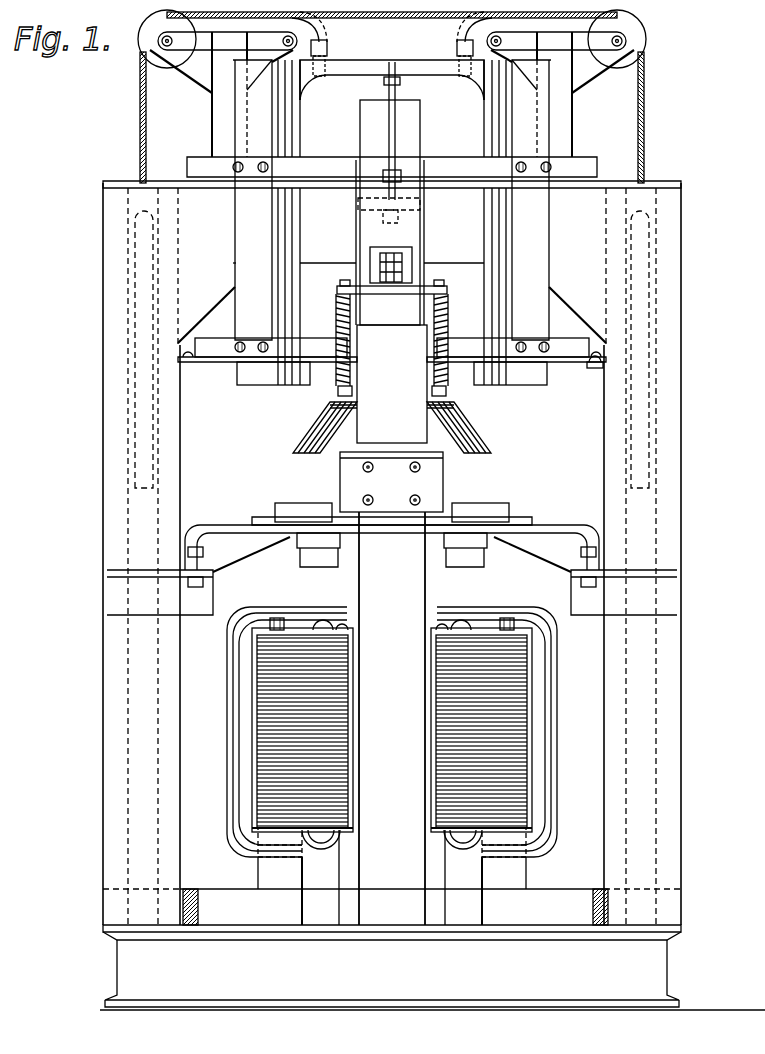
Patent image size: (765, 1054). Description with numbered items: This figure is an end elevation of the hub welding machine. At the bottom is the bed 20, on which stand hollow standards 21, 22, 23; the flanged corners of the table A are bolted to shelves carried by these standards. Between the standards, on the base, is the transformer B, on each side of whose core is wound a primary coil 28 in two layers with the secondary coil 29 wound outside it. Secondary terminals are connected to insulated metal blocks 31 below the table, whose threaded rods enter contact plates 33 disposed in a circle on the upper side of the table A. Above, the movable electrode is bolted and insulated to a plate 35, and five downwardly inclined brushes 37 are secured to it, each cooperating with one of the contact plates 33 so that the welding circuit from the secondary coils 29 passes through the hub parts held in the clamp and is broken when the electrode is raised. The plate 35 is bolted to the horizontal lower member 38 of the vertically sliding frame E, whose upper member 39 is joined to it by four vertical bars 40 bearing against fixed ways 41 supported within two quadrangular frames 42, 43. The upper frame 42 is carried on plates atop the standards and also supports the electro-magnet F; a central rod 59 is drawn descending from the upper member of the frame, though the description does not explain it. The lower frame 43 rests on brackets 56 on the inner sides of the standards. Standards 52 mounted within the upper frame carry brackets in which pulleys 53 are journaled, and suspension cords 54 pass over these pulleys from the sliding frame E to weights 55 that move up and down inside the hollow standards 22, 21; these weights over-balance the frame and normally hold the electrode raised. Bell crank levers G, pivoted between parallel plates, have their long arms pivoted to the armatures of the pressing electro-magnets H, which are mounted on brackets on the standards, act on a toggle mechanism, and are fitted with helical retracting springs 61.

The bed 20 is at (432, 971).
The hollow standard 21 is at (681, 645).
The hollow standard 22 is at (103, 640).
The hollow standard 23 is at (391, 688).
The primary coil 28 is at (542, 797).
The secondary coil 29 is at (560, 769).
The metal block 31 is at (472, 563).
The contact plate 33 is at (507, 503).
The plate 35 is at (215, 262).
The downwardly inclined brush 37 is at (473, 428).
The horizontal lower member 38 is at (312, 386).
The upper member 39 is at (426, 80).
The vertical bar 40 is at (485, 137).
The fixed way 41 is at (392, 200).
The quadrangular frame 42 is at (392, 165).
The quadrangular frame 43 is at (212, 363).
The standard 52 is at (585, 118).
The pulley 53 is at (392, 52).
The suspension cord 54 is at (140, 130).
The weight 55 is at (150, 410).
The bracket 56 is at (592, 368).
The adjusting rod 59 is at (402, 131).
The helical retracting spring 61 is at (447, 329).
The table A is at (563, 523).
The transformer B is at (416, 875).
The vertically sliding frame E is at (480, 292).
The electro-magnet F is at (380, 115).
The bell crank lever G is at (402, 257).
The pressing electro-magnet H is at (392, 384).